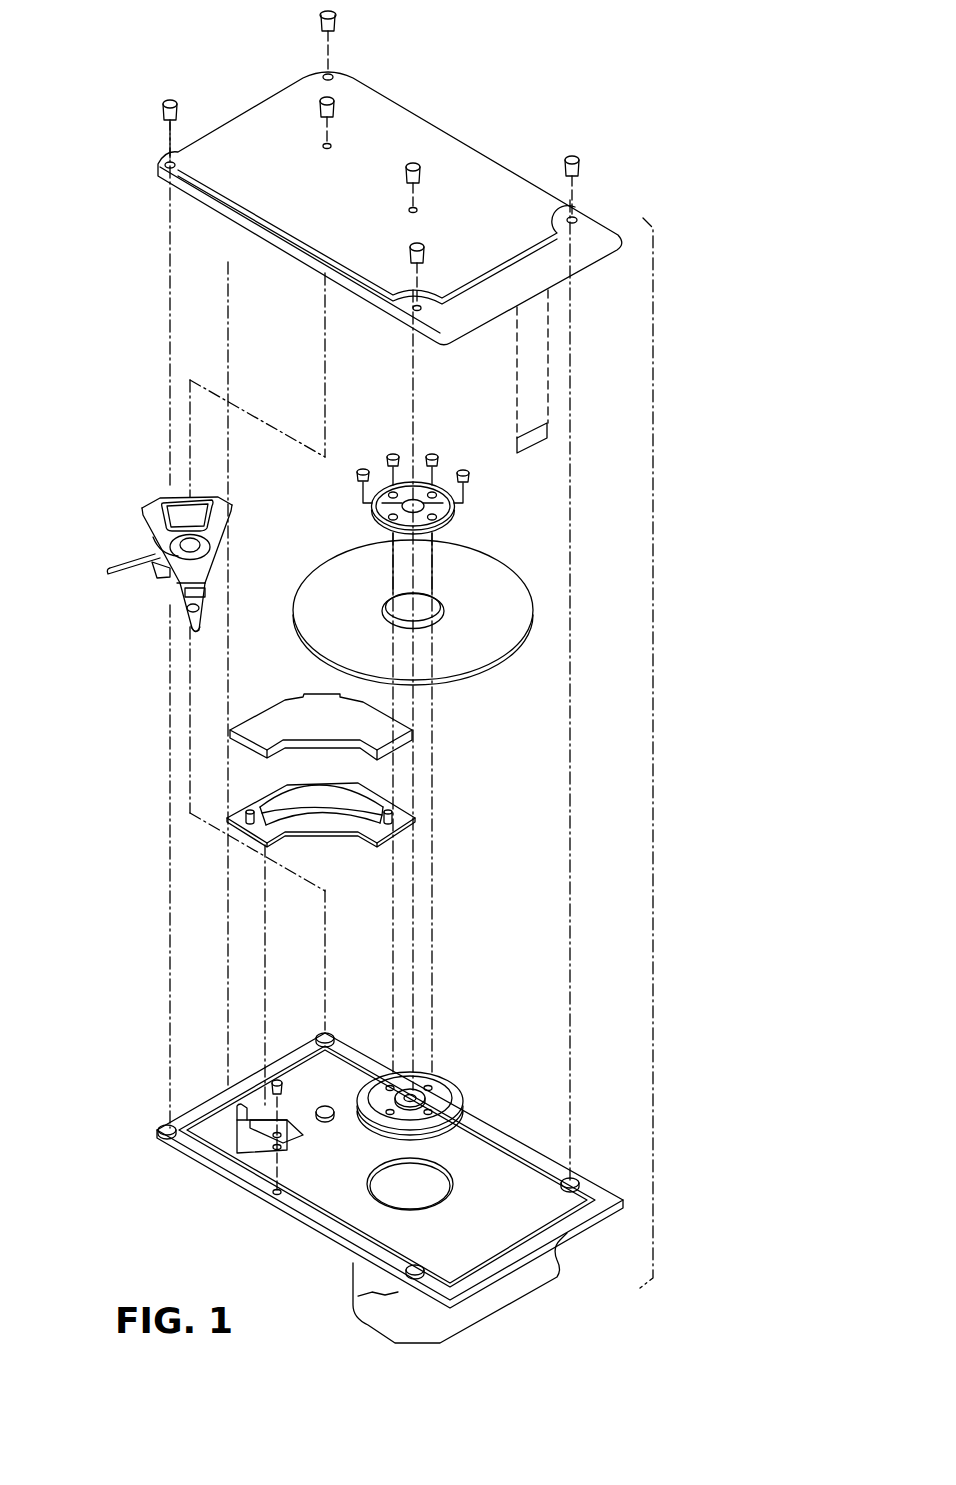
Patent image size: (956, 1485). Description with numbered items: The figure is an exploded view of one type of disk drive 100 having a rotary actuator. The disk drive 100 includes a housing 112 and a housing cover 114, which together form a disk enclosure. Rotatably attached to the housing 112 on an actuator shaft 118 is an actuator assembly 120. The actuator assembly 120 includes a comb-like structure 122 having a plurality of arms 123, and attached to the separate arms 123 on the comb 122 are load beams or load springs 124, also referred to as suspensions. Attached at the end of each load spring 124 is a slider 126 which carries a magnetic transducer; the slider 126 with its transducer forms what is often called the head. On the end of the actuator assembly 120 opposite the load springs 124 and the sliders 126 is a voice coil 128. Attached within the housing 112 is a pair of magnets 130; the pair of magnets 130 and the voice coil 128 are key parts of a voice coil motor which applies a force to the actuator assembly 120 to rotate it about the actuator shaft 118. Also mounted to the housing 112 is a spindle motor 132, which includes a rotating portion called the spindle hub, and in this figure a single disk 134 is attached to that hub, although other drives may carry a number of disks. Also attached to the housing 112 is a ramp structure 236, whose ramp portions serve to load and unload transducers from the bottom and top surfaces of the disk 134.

The disk drive 100 is at (594, 112).
The housing 112 is at (243, 1172).
The housing cover 114 is at (472, 160).
The actuator shaft 118 is at (163, 532).
The actuator assembly 120 is at (212, 550).
The comb-like structure 122 is at (203, 563).
The arms 123 is at (208, 588).
The load springs 124 is at (177, 603).
The slider 126 is at (195, 633).
The voice coil 128 is at (163, 498).
The pair of magnets 130 is at (292, 802).
The spindle motor 132 is at (440, 1092).
The disk 134 is at (480, 567).
The ramp structure 236 is at (292, 1152).